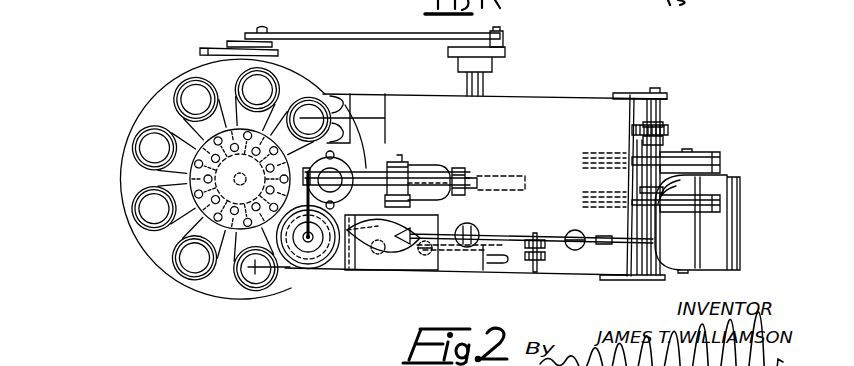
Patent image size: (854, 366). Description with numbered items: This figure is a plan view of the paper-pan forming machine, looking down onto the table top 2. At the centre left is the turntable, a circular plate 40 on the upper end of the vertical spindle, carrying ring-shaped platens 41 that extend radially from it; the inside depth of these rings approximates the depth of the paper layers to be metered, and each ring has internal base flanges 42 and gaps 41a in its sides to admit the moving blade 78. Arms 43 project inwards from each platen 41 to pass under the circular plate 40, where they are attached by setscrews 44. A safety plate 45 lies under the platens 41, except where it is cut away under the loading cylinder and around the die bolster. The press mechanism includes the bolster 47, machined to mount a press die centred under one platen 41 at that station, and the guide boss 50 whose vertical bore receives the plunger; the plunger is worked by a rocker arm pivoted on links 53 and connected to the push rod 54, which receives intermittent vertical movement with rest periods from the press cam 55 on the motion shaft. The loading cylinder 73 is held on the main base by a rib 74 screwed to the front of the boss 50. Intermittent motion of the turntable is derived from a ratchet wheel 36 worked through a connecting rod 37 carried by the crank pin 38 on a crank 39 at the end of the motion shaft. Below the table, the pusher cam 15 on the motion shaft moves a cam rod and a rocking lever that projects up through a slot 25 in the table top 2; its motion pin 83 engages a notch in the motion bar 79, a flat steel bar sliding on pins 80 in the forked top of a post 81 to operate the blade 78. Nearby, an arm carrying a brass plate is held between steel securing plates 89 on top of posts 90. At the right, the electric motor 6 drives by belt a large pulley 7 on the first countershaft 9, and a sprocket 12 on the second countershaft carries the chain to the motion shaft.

The table top 2 is at (602, 128).
The electric motor 6 is at (741, 221).
The large pulley 7 is at (719, 155).
The first countershaft 9 is at (657, 95).
The sprocket 12 is at (667, 132).
The pusher cam 15 is at (483, 252).
The slot 25 is at (567, 266).
The ratchet wheel 36 is at (200, 51).
The connecting rod 37 is at (370, 36).
The crank pin 38 is at (503, 35).
The crank 39 is at (505, 53).
The circular plate 40 is at (198, 210).
The rings or platens 41 is at (142, 128).
The gaps 41a is at (188, 172).
The internal base flanges 42 is at (167, 212).
The arms 43 is at (205, 228).
The setscrews 44 is at (197, 153).
The plate 45 is at (222, 80).
The bolster 47 is at (348, 168).
The guide boss 50 is at (342, 173).
The links 53 is at (408, 167).
The push rod 54 is at (463, 170).
The press cam 55 is at (510, 182).
The loading cylinder 73 is at (302, 270).
The rib 74 is at (266, 263).
The blade 78 is at (358, 252).
The motion bar 79 is at (604, 233).
The pins 80 is at (474, 231).
The post 81 is at (571, 233).
The motion pin 83 is at (535, 272).
The steel securing plates 89 is at (385, 256).
The posts 90 is at (423, 255).